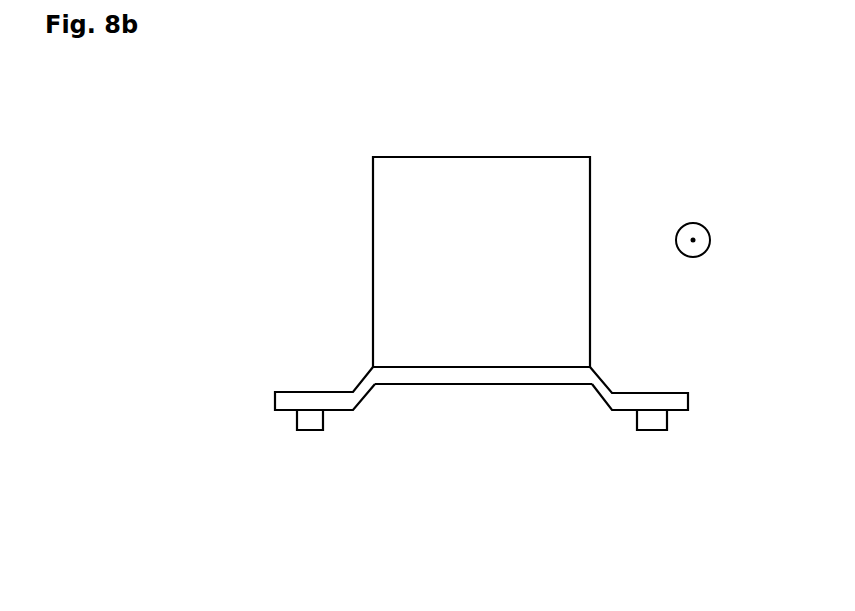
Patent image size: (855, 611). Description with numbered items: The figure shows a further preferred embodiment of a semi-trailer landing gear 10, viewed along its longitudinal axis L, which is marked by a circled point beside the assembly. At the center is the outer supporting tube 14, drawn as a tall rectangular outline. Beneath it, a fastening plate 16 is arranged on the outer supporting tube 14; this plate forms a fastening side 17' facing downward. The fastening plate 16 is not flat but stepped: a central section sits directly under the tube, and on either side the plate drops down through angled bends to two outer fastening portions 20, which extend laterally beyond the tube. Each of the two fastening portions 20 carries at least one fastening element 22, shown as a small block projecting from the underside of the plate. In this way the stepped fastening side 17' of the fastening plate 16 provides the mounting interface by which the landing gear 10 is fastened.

The semi-trailer landing gear 10 is at (488, 324).
The outer supporting tube 14 is at (493, 157).
The fastening plate 16 is at (587, 372).
The fastening side 17' is at (441, 530).
The fastening portions 20 is at (352, 442).
The fastening element 22 is at (300, 425).
The longitudinal axis L is at (693, 240).